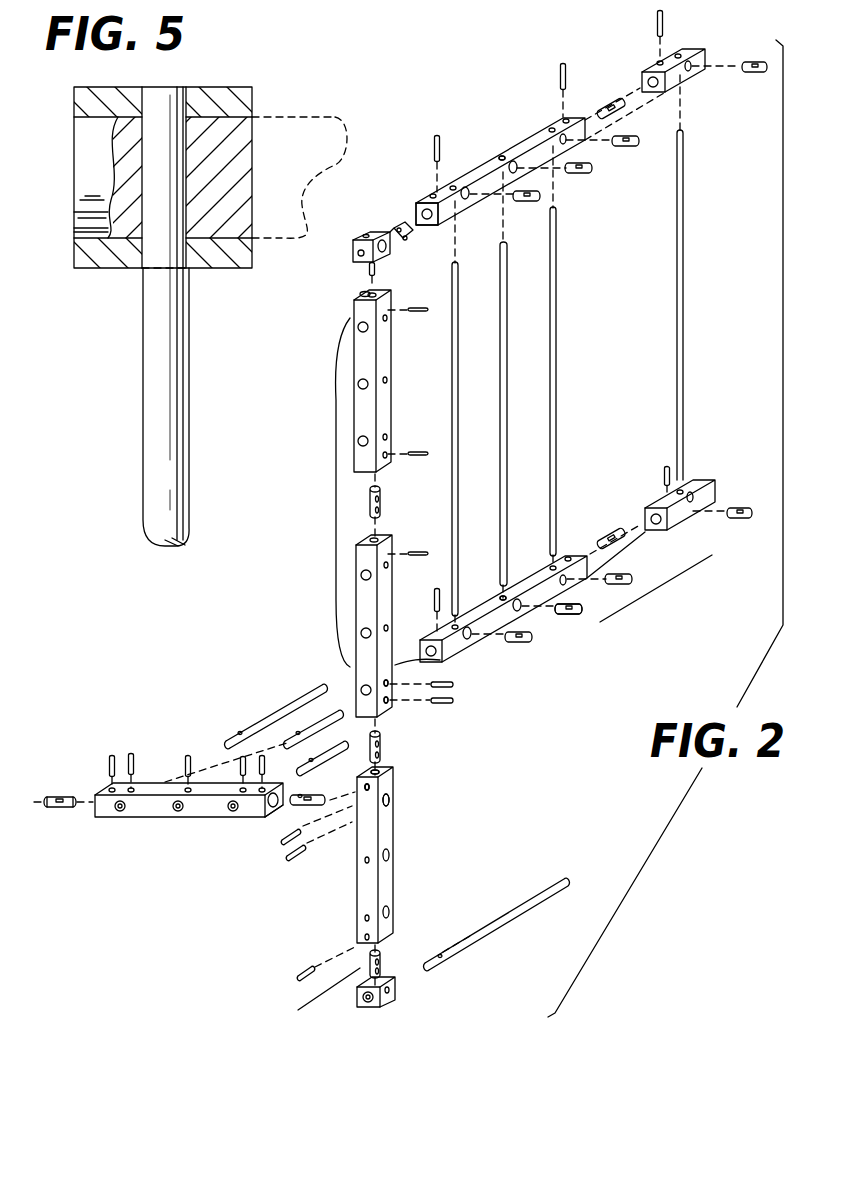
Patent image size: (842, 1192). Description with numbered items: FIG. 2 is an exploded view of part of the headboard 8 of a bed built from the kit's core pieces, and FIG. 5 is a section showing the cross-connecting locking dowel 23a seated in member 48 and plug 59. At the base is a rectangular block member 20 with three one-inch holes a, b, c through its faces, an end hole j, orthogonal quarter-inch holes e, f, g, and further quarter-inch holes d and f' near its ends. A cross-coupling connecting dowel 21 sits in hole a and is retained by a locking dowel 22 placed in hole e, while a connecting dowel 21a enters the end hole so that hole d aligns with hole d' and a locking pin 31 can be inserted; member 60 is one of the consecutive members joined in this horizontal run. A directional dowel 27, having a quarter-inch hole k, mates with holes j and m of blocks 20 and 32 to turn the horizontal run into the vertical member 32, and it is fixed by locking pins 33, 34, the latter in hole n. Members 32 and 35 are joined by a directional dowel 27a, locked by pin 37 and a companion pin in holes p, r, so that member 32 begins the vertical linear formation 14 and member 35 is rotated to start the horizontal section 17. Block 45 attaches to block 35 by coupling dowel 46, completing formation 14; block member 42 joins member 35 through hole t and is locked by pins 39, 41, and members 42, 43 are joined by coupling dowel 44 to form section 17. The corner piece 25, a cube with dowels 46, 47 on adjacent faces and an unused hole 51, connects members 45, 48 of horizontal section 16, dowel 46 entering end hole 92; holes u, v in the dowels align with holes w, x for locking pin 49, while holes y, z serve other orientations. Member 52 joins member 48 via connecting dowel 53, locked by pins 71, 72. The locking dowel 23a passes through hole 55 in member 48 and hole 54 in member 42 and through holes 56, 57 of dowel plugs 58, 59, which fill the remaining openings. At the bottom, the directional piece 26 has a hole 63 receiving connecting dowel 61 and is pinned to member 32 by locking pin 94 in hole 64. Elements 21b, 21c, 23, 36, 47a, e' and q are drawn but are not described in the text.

In FIG. 2, the headboard 8 is at (704, 238).
In FIG. 2, the vertical linear formation 14 is at (335, 500).
In FIG. 2, the horizontal linear section 16 is at (686, 88).
In FIG. 2, the linear horizontal section 17 is at (675, 575).
In FIG. 2, the rectangular block member 20 is at (152, 820).
In FIG. 2, the cross-coupling connecting dowel 21 is at (261, 757).
In FIG. 2, the connecting dowel 21a is at (62, 810).
In FIG. 2, the rod 21b is at (335, 745).
In FIG. 2, the rod 21c is at (330, 712).
In FIG. 2, the locking dowel 22 is at (129, 755).
In FIG. 2, the rod 23 is at (505, 325).
In FIG. 5, the cross-connecting locking dowel 23a is at (150, 450).
In FIG. 2, the corner piece 25 is at (353, 250).
In FIG. 2, the directional piece 26 is at (382, 1002).
In FIG. 2, the directional dowel 27 is at (335, 812).
In FIG. 2, the directional dowel 27a is at (383, 748).
In FIG. 2, the locking pin 31 is at (112, 757).
In FIG. 2, the rectangular member 32 is at (390, 878).
In FIG. 2, the locking pin 33 is at (455, 684).
In FIG. 2, the locking pin 34 is at (289, 856).
In FIG. 2, the rectangular member 35 is at (382, 610).
In FIG. 2, the pin 36 is at (284, 840).
In FIG. 2, the locking pin 37 is at (392, 706).
In FIG. 2, the locking pin 39 is at (455, 700).
In FIG. 2, the locking pin 41 is at (437, 585).
In FIG. 2, the rectangular block member 42 is at (478, 610).
In FIG. 2, the rectangular member 43 is at (413, 200).
In FIG. 2, the coupling dowel 44 is at (618, 532).
In FIG. 2, the rectangular block 45 is at (380, 410).
In FIG. 2, the coupling dowel 46 is at (358, 295).
In FIG. 2, the dowel 47 is at (403, 225).
In FIG. 2, the pin 47a is at (437, 135).
In FIG. 5, the rectangular member 48 is at (247, 96).
In FIG. 2, the rectangular member 48 is at (448, 196).
In FIG. 2, the locking pin 49 is at (456, 270).
In FIG. 2, the hole 51 is at (395, 257).
In FIG. 2, the rectangular member 52 is at (685, 52).
In FIG. 2, the connecting dowel 53 is at (614, 102).
In FIG. 2, the hole 54 is at (513, 593).
In FIG. 5, the hole 55 is at (196, 108).
In FIG. 2, the hole 55 is at (503, 157).
In FIG. 2, the hole 56 is at (566, 616).
In FIG. 5, the hole 57 is at (120, 228).
In FIG. 2, the hole 57 is at (592, 168).
In FIG. 2, the dowel plug 58 is at (583, 610).
In FIG. 5, the dowel plug 59 is at (280, 120).
In FIG. 2, the rectangular member 60 is at (382, 960).
In FIG. 2, the connecting dowel 61 is at (484, 916).
In FIG. 2, the hole 63 is at (362, 1005).
In FIG. 2, the hole 64 is at (308, 998).
In FIG. 2, the locking pin 71 is at (563, 65).
In FIG. 2, the locking pin 72 is at (657, 20).
In FIG. 2, the end hole 92 is at (350, 320).
In FIG. 2, the locking pin 94 is at (298, 975).
In FIG. 2, the hole a is at (120, 812).
In FIG. 2, the middle hole b is at (178, 812).
In FIG. 2, the hole c is at (235, 812).
In FIG. 2, the hole d is at (79, 770).
In FIG. 2, the hole d' is at (53, 860).
In FIG. 2, the hole e is at (213, 812).
In FIG. 2, the hole e' is at (223, 732).
In FIG. 2, the hole f is at (169, 748).
In FIG. 2, the hole f' is at (31, 821).
In FIG. 2, the hole g is at (242, 789).
In FIG. 2, the end hole j is at (252, 818).
In FIG. 2, the hole k is at (300, 794).
In FIG. 2, the hole m is at (385, 798).
In FIG. 2, the hole n is at (372, 805).
In FIG. 2, the hole p is at (395, 779).
In FIG. 2, the hole q is at (390, 792).
In FIG. 2, the hole r is at (397, 700).
In FIG. 2, the hole t is at (445, 668).
In FIG. 2, the hole u is at (378, 270).
In FIG. 2, the hole v is at (396, 230).
In FIG. 2, the hole w is at (386, 306).
In FIG. 2, the hole x is at (430, 194).
In FIG. 2, the hole y is at (368, 270).
In FIG. 2, the hole z is at (400, 240).